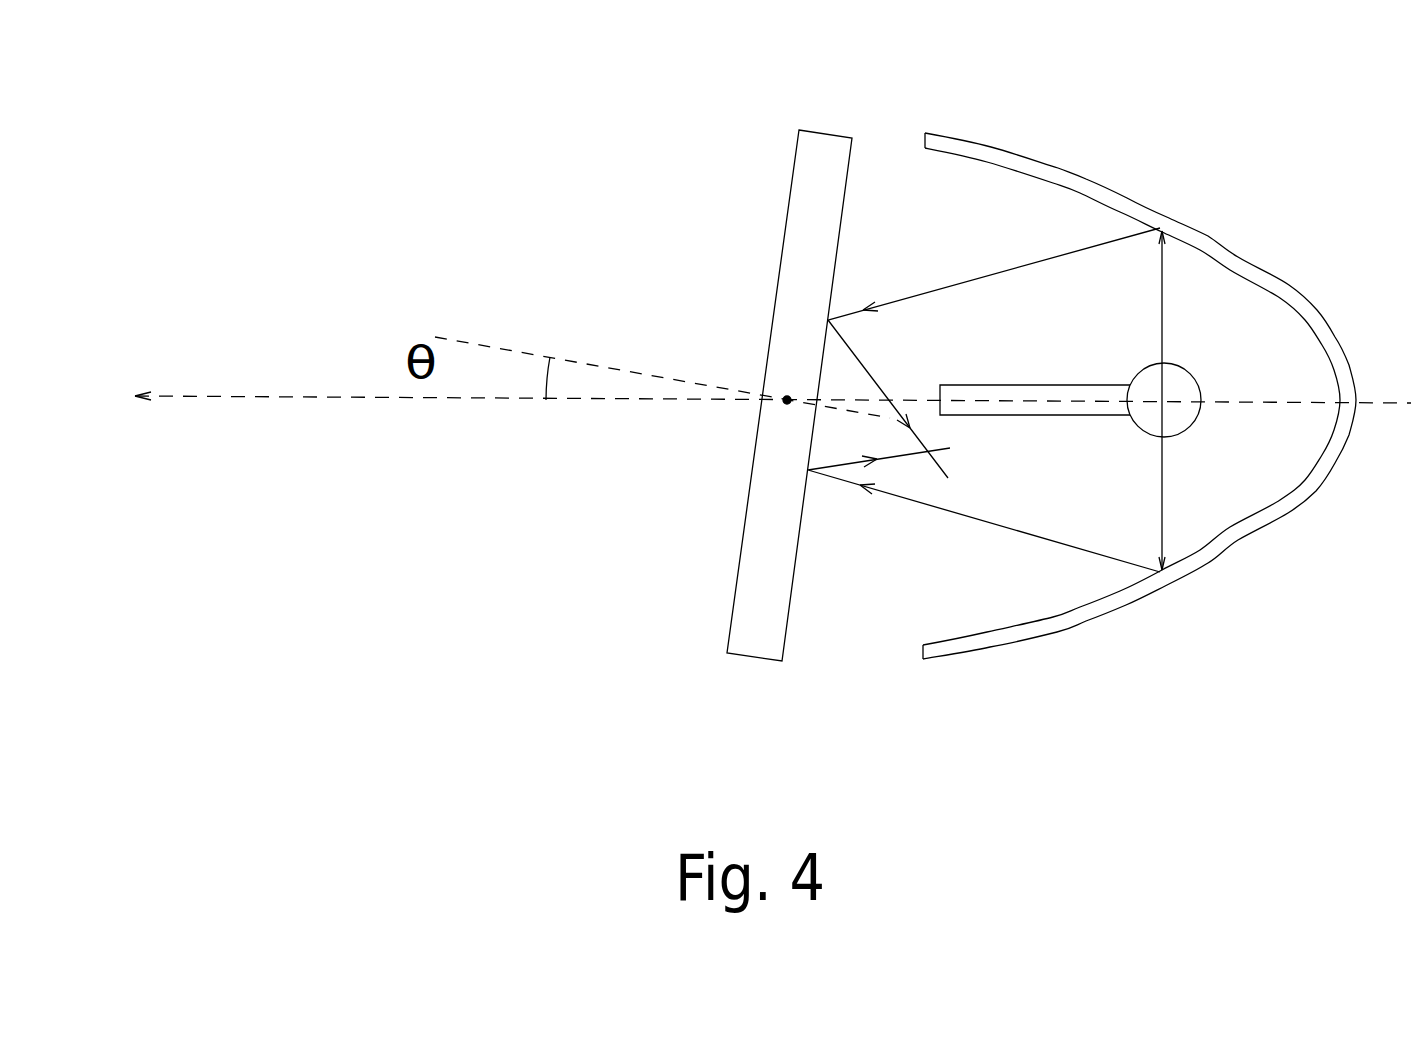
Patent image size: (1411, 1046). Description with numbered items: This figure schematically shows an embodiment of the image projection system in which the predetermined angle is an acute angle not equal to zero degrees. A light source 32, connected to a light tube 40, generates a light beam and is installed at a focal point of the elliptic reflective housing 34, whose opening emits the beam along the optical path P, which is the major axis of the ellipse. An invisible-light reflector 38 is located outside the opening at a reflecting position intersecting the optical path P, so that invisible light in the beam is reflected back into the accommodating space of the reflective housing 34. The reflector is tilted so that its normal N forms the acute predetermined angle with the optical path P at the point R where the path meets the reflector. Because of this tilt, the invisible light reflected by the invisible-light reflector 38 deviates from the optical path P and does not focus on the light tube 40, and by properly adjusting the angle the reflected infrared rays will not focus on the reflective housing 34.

The light source 32 is at (1190, 430).
The reflective housing 34 is at (1230, 257).
The invisible-light reflector 38 is at (767, 662).
The light tube 40 is at (1020, 417).
The normal of the invisible-light reflector N is at (484, 347).
The optical path P is at (235, 397).
The rotation point / reflection point R is at (787, 399).